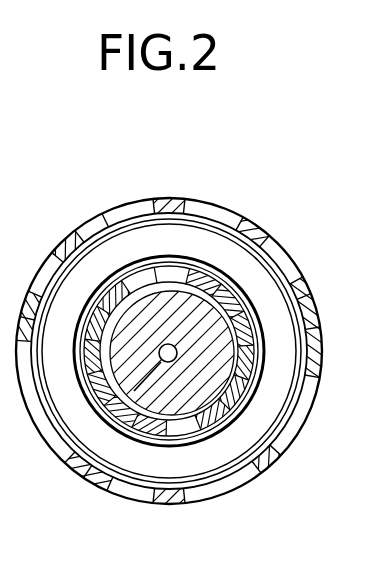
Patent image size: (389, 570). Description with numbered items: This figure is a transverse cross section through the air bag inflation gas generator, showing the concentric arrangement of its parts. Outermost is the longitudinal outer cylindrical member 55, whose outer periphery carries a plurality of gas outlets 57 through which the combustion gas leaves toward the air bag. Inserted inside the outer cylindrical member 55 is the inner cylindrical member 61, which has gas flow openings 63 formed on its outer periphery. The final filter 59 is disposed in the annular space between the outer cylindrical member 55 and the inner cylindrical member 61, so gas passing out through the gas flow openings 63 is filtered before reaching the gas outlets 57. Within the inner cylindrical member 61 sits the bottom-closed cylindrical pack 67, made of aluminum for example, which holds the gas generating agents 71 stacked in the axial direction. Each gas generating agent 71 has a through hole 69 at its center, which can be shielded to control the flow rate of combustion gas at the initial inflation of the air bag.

The outer cylindrical member 55 is at (257, 232).
The gas outlets 57 is at (201, 210).
The final filter 59 is at (273, 368).
The inner cylindrical member 61 is at (258, 336).
The gas flow openings 63 is at (240, 387).
The cylindrical pack 67 is at (238, 296).
The through hole 69 is at (134, 392).
The gas generating agents 71 is at (211, 392).